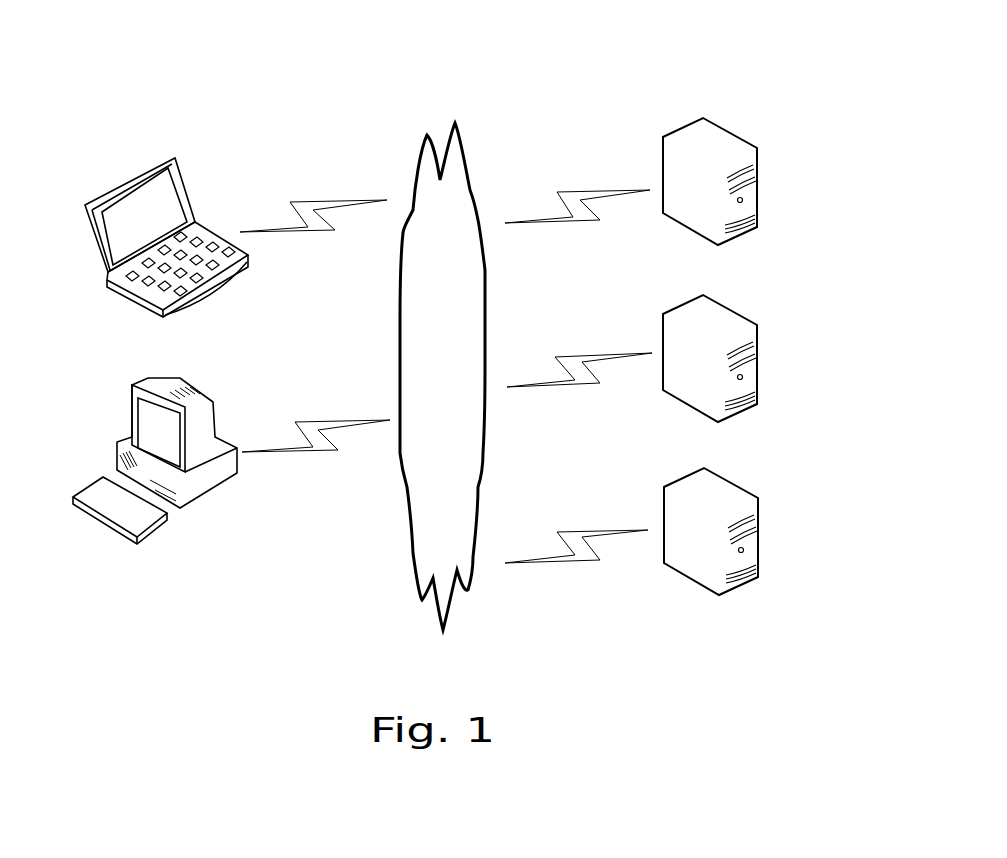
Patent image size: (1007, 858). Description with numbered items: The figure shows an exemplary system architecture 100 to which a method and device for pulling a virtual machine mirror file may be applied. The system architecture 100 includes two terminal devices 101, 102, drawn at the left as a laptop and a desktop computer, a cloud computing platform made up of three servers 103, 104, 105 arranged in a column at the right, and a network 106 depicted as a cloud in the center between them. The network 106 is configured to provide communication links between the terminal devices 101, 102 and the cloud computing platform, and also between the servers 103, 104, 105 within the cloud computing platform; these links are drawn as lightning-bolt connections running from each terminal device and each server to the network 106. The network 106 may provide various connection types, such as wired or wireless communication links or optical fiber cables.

The system architecture 100 is at (665, 33).
The terminal device 101 is at (166, 256).
The terminal device 102 is at (155, 475).
The server 103 is at (710, 200).
The server 104 is at (710, 376).
The server 105 is at (711, 557).
The network 106 is at (442, 376).